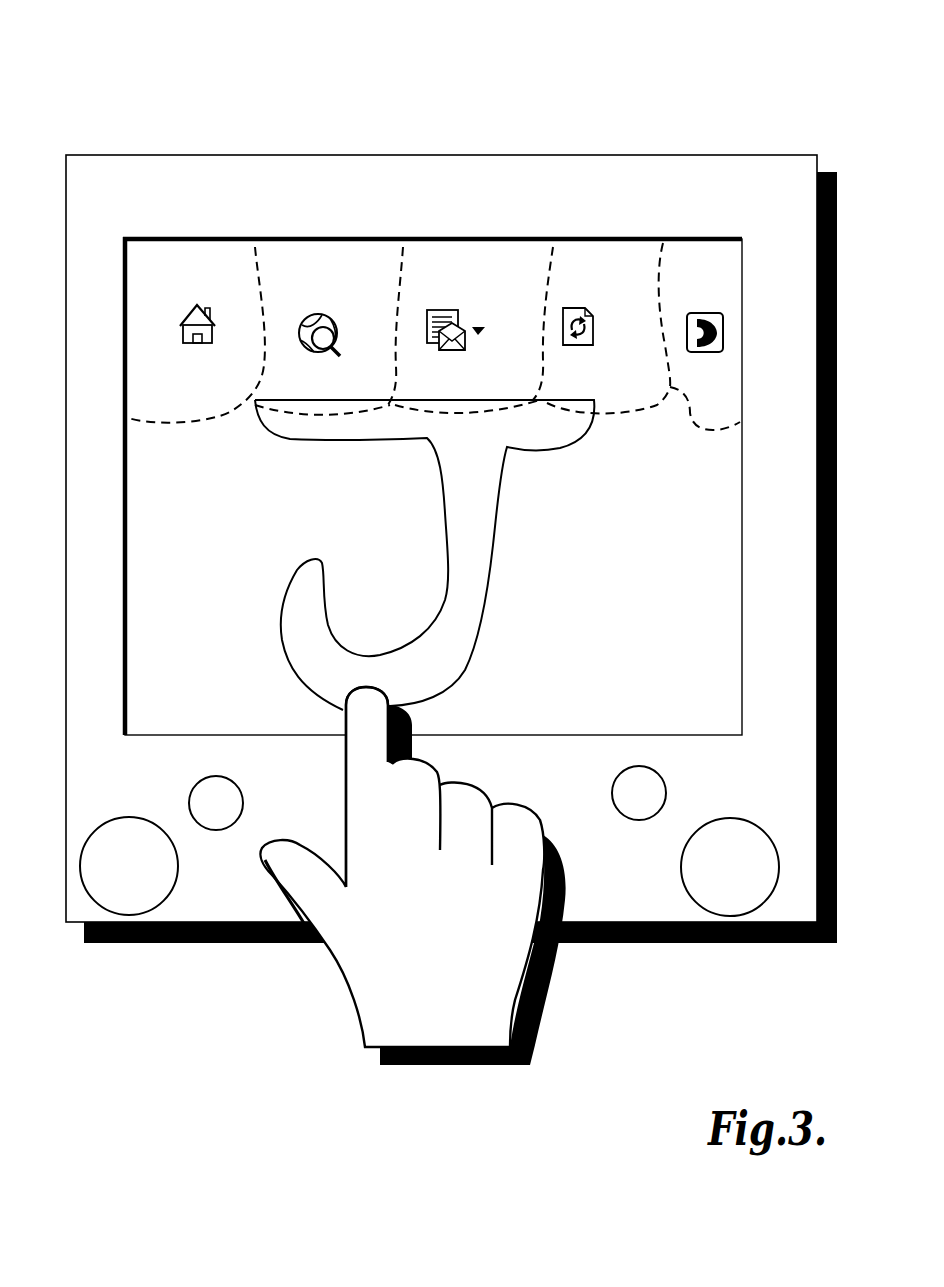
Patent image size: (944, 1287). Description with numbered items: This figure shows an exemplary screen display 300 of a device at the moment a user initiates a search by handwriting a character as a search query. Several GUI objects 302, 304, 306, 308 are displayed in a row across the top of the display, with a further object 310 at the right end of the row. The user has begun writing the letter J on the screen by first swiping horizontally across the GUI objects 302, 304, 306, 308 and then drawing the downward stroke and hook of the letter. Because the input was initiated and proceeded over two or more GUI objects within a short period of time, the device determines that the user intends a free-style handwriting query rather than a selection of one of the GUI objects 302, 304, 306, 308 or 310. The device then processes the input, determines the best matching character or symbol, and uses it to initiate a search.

The mobile device with touch screen 300 is at (668, 66).
The GUI object 302 is at (178, 252).
The GUI object 304 is at (328, 253).
The GUI object 306 is at (450, 253).
The GUI object 308 is at (590, 253).
The phone icon region 310 is at (695, 253).